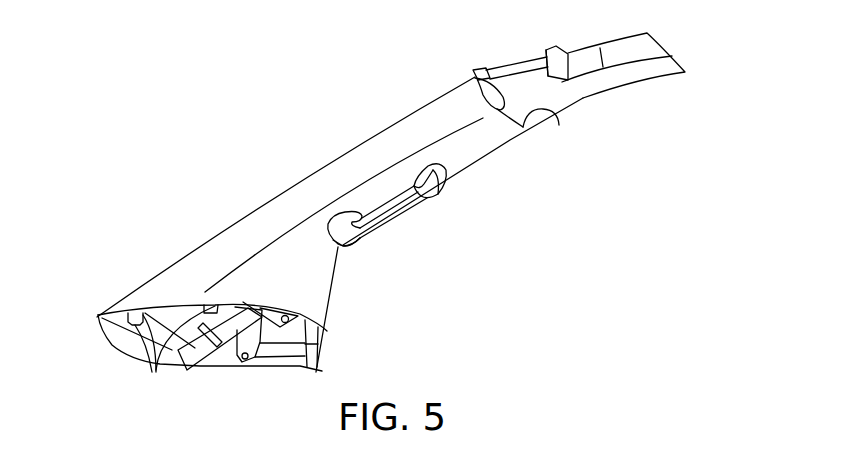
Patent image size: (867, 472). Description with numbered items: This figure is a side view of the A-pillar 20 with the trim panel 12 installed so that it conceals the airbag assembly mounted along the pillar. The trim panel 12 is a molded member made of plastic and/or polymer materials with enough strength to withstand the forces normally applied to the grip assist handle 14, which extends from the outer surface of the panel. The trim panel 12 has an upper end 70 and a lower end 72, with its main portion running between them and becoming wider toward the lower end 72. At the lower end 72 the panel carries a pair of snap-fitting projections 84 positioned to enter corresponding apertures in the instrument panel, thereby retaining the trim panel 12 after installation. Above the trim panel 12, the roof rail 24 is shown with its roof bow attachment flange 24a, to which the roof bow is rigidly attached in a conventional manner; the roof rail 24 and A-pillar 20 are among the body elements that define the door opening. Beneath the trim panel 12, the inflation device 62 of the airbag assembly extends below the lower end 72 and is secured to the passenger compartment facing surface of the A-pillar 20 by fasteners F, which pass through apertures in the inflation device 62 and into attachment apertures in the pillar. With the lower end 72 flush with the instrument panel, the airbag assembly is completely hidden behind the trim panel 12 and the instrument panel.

The trim panel 12 is at (492, 158).
The grip assist handle 14 is at (405, 213).
The A-pillar 20 is at (110, 325).
The roof rail 24 is at (623, 52).
The roof bow attachment flange 24a is at (486, 76).
The inflation device 62 is at (183, 360).
The upper end 70 is at (559, 125).
The lower end 72 is at (324, 337).
The snap-fitting projections 84 is at (152, 360).
The fasteners F is at (281, 328).